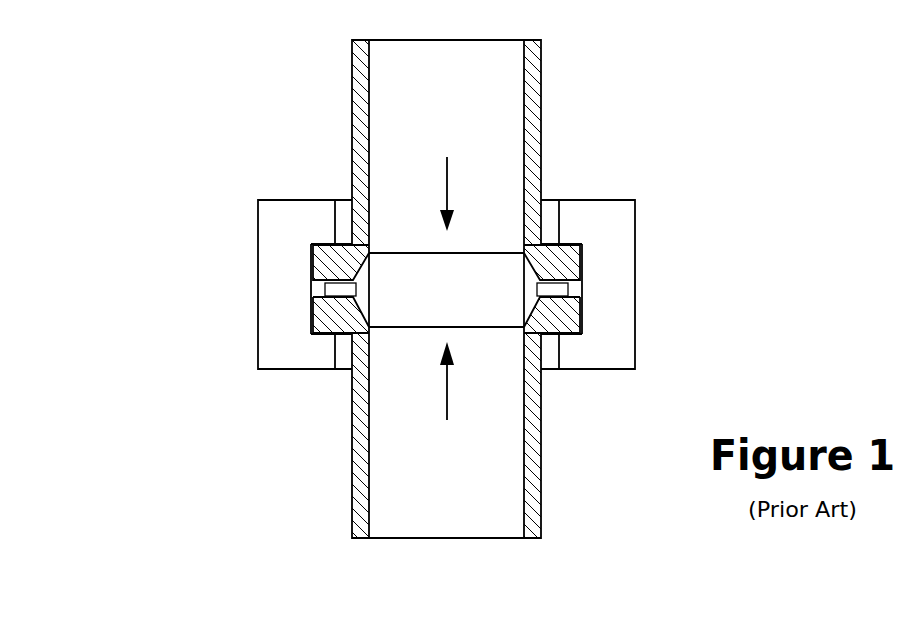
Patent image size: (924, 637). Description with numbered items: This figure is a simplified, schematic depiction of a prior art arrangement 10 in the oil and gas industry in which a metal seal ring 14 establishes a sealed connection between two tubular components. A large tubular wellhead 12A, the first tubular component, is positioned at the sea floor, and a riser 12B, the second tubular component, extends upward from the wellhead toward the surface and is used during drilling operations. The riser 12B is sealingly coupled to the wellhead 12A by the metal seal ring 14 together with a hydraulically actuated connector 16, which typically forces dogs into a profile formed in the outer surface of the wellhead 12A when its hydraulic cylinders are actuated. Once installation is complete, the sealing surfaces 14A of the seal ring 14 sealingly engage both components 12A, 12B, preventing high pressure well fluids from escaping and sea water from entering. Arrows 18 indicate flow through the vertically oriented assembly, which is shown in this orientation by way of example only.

The valve assembly (prior art) 10 is at (394, 283).
The wellhead 12A is at (360, 449).
The riser 12B is at (358, 137).
The metal seal ring 14 is at (530, 288).
The sealing surfaces 14A is at (537, 312).
The hydraulically actuated connector 16 is at (270, 240).
The flow direction 18 is at (446, 173).